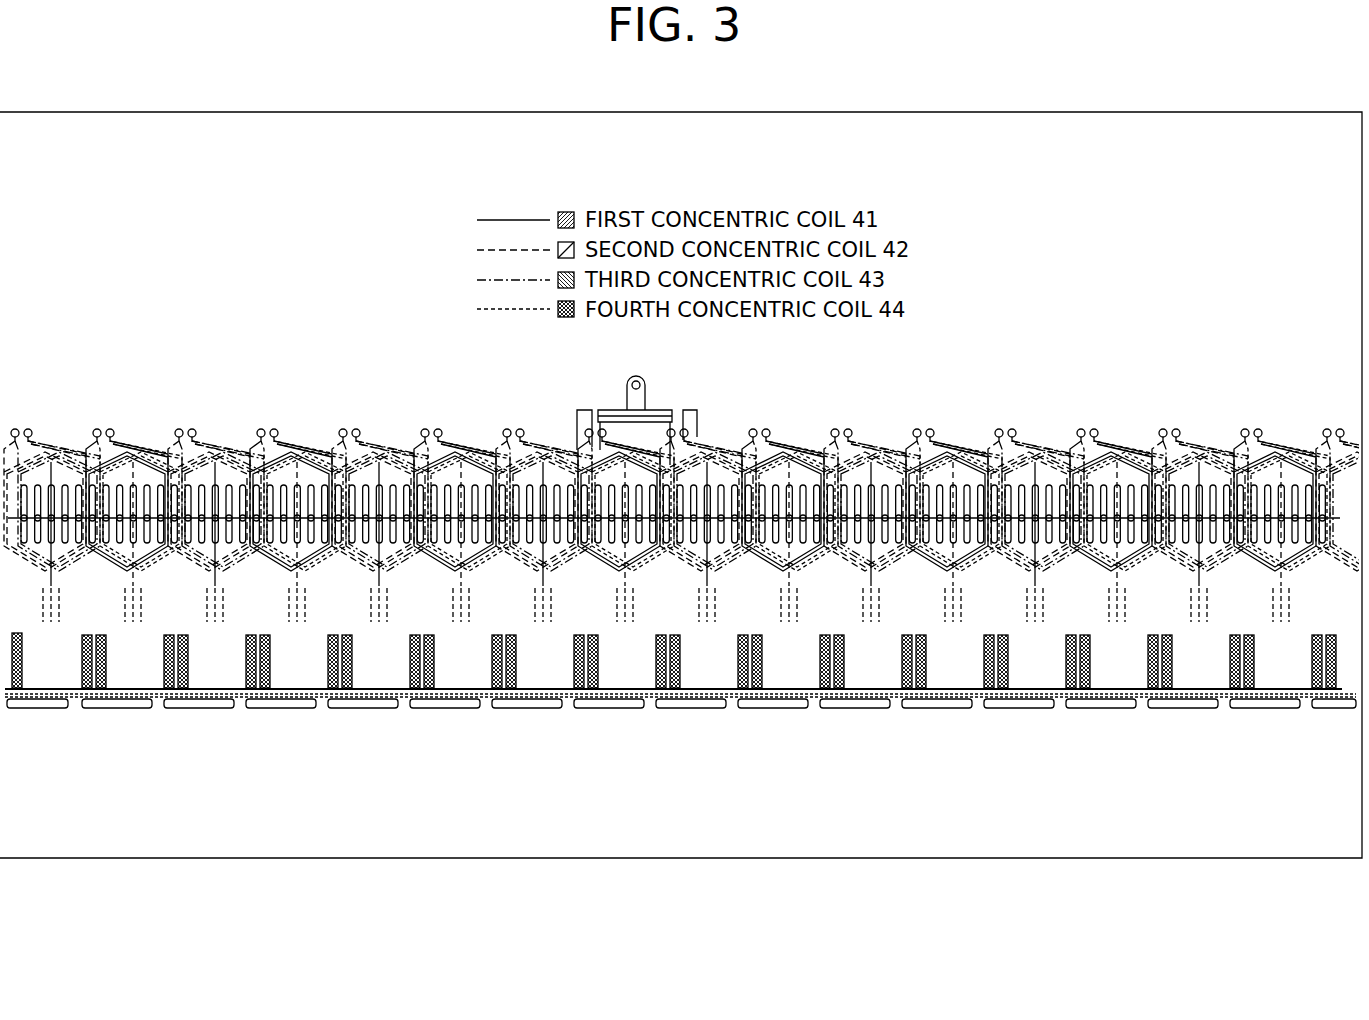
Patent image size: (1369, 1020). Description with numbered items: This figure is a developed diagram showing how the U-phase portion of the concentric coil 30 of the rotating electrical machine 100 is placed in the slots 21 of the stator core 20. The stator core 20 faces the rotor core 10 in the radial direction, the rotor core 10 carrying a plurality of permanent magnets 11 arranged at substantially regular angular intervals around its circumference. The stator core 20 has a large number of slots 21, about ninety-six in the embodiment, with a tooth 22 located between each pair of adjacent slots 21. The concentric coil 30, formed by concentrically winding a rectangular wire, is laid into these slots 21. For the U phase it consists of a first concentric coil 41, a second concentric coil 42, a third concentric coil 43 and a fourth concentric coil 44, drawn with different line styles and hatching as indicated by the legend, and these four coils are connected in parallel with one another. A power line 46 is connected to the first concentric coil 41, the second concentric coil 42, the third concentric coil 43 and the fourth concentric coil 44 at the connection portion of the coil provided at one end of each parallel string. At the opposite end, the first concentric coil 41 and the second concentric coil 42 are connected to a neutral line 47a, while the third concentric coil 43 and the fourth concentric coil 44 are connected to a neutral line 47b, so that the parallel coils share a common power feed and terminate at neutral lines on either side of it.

The rotating electrical machine 100 is at (953, 315).
The rotor core 10 is at (265, 732).
The permanent magnet 11 is at (530, 710).
The stator core 20 is at (146, 684).
The slot 21 is at (162, 683).
The tooth 22 is at (173, 692).
The concentric coil 30 is at (345, 428).
The U-phase first concentric coil 41 is at (715, 432).
The U-phase second concentric coil 42 is at (742, 438).
The U-phase third concentric coil 43 is at (577, 447).
The U-phase fourth concentric coil 44 is at (577, 436).
The power line 46 is at (645, 393).
The neutral line 47a is at (692, 410).
The neutral line 47b is at (577, 408).